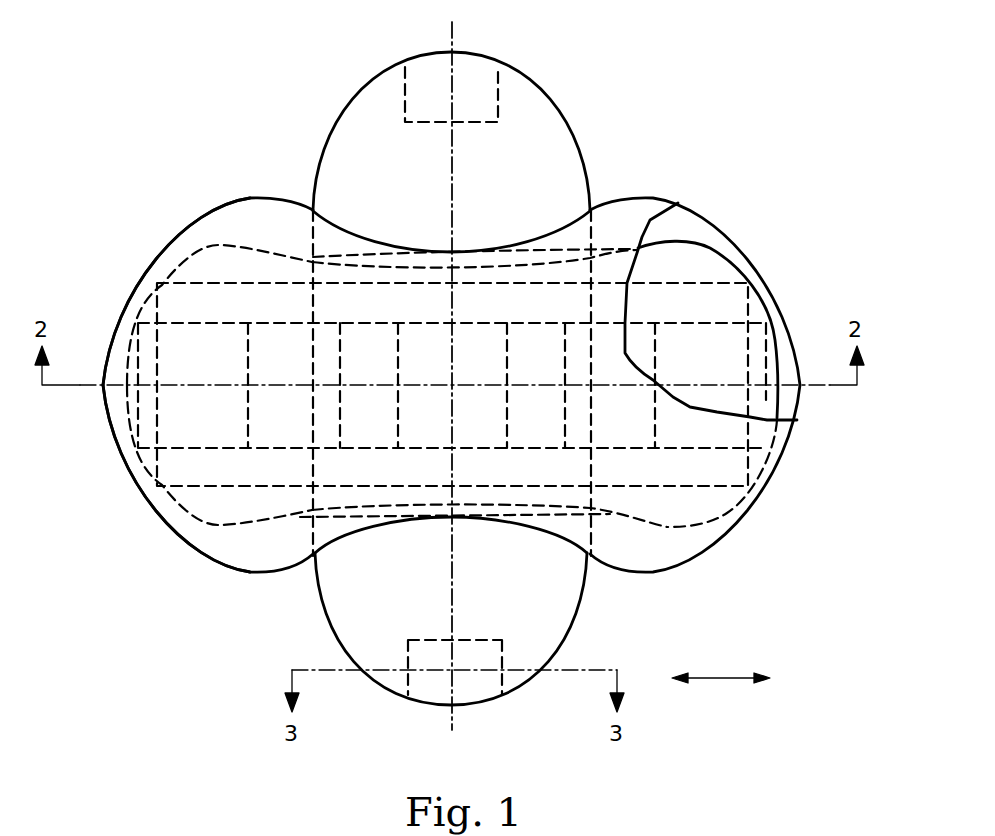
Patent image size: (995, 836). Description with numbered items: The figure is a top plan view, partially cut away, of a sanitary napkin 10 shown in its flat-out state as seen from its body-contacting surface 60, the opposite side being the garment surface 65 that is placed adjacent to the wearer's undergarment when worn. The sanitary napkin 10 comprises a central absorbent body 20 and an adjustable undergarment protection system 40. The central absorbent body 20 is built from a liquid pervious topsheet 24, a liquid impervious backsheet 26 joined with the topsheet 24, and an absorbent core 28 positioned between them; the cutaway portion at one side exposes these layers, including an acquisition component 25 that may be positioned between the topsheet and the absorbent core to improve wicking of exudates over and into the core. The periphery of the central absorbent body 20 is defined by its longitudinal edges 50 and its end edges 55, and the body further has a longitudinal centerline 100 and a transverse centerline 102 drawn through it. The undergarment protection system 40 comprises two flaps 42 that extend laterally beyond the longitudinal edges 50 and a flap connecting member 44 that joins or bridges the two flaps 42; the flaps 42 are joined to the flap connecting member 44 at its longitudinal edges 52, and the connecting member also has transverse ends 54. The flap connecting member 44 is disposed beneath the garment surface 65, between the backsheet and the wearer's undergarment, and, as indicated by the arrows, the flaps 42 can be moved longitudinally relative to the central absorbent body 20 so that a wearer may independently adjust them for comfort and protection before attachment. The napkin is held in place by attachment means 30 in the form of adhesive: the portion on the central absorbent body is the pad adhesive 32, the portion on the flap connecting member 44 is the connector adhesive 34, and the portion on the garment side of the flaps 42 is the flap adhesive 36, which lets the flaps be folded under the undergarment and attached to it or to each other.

The sanitary napkin 10 is at (626, 81).
The central absorbent body 20 is at (452, 384).
The topsheet 24 is at (695, 500).
The acquisition component 25 is at (710, 270).
The backsheet 26 is at (735, 248).
The absorbent core 28 is at (715, 470).
The attachment means 30 is at (427, 407).
The pad adhesive 32 is at (127, 437).
The connector adhesive 34 is at (550, 343).
The flap adhesive 36 is at (488, 78).
The adjustable undergarment protection system 40 is at (352, 89).
The flaps 42 is at (451, 433).
The flap connecting member 44 is at (400, 470).
The longitudinal edges 50 is at (548, 237).
The longitudinal edges of the flap connecting member 52 is at (320, 250).
The transverse ends 54 is at (600, 493).
The end edges 55 is at (123, 287).
The body-contacting surface 60 is at (452, 385).
The garment surface 65 is at (186, 563).
The longitudinal centerline 100 is at (88, 387).
The transverse centerline 102 is at (452, 33).